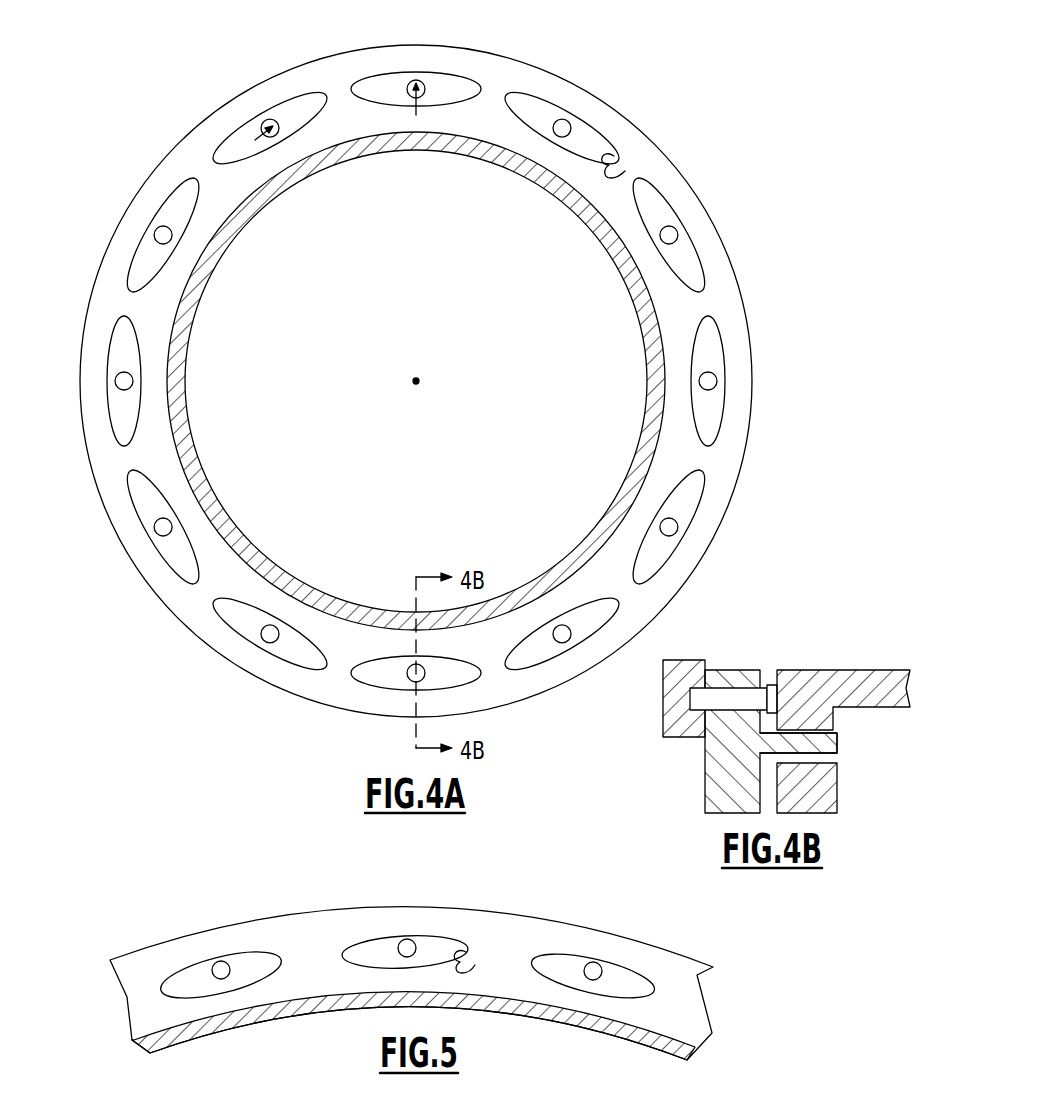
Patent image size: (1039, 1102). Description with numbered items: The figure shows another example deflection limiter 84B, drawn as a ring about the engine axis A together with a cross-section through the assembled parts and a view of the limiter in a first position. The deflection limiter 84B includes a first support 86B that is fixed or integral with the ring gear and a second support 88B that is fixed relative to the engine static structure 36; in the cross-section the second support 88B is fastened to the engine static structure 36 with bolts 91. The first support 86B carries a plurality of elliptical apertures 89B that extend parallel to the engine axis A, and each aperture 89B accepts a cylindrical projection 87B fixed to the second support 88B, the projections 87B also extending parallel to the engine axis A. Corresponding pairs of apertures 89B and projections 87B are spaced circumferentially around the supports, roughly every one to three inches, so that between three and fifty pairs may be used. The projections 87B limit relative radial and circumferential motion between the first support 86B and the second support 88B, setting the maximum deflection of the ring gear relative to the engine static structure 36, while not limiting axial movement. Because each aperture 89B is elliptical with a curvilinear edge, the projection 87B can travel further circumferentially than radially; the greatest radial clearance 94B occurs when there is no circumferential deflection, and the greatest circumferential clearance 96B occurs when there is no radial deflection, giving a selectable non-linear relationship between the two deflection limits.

In FIG. 4A, the deflection limiter 84B is at (396, 364).
In FIG. 4A, the first support 86B is at (633, 143).
In FIG. 4B, the first support 86B is at (850, 670).
In FIG. 5, the first support 86B is at (513, 935).
In FIG. 4A, the projection 87B is at (567, 120).
In FIG. 4B, the projection 87B is at (837, 743).
In FIG. 5, the projection 87B is at (409, 939).
In FIG. 4A, the second support 88B is at (585, 137).
In FIG. 4B, the second support 88B is at (722, 767).
In FIG. 5, the second support 88B is at (445, 953).
In FIG. 4A, the aperture 89B is at (603, 162).
In FIG. 4B, the aperture 89B is at (833, 763).
In FIG. 5, the aperture 89B is at (455, 963).
In FIG. 4B, the bolt 91 is at (743, 702).
In FIG. 4B, the engine static structure 36 is at (692, 660).
In FIG. 4A, the radial clearance 94B is at (416, 38).
In FIG. 4A, the circumferential clearance 96B is at (335, 90).
In FIG. 4A, the engine axis A is at (416, 381).